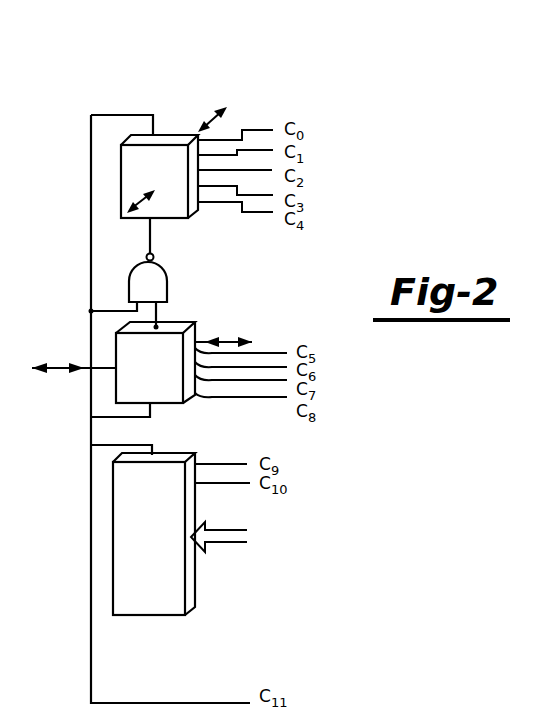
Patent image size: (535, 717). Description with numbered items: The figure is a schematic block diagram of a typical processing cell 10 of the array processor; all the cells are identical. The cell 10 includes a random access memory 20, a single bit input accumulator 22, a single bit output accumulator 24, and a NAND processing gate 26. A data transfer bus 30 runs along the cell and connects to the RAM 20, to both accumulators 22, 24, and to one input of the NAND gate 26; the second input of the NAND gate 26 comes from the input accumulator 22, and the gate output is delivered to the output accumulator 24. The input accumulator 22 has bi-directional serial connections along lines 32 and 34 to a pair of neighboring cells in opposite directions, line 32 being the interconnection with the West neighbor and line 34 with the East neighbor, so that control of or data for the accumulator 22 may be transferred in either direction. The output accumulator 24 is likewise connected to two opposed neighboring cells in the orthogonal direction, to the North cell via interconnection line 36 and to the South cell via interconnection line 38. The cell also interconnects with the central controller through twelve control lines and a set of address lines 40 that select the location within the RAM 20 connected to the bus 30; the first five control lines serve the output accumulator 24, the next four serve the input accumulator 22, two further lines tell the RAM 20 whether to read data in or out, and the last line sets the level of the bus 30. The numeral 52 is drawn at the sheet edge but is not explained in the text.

The processing cell 10 is at (330, 241).
The random access memory 20 is at (193, 591).
The single bit input accumulator 22 is at (197, 328).
The single bit output accumulator 24 is at (175, 135).
The NAND processing gate 26 is at (167, 282).
The data transfer bus 30 is at (91, 232).
The interconnection line to West neighboring cell 32 is at (55, 366).
The interconnection line to East neighboring cell 34 is at (230, 338).
The interconnection line to North neighboring cell 36 is at (218, 118).
The interconnection line to South neighboring cell 38 is at (127, 198).
The address lines 40 is at (208, 530).
The connection 52 is at (406, 705).